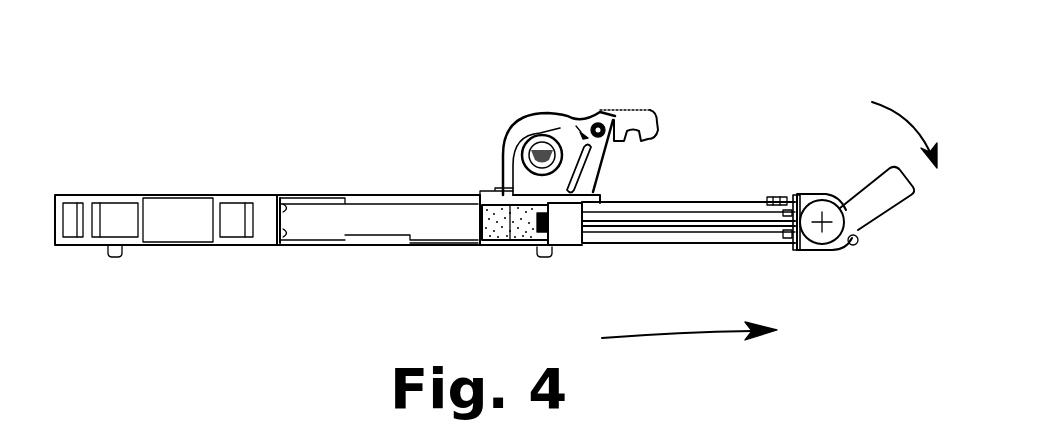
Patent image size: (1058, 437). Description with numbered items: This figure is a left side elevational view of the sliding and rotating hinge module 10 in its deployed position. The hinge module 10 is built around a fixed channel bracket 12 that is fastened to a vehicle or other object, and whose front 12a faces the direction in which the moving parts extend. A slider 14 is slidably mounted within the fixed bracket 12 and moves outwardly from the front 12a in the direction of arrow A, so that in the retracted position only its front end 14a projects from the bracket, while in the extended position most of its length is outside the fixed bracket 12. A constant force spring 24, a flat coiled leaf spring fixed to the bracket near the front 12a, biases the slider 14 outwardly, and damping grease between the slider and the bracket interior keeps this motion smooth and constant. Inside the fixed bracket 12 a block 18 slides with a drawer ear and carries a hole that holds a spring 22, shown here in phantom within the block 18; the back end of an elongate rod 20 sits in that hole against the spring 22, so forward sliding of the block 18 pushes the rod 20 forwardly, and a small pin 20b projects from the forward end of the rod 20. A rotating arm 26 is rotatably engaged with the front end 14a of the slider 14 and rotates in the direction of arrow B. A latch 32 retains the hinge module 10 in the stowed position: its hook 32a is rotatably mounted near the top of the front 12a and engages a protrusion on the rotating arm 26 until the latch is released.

The hinge module 10 is at (852, 60).
The fixed channel bracket 12 is at (142, 197).
The front 12a is at (600, 184).
The slider 14 is at (722, 208).
The front end 14a is at (807, 202).
The block 18 is at (485, 247).
The elongate rod 20 is at (708, 243).
The pin 20b is at (803, 250).
The spring 22 is at (510, 247).
The constant force spring 24 is at (533, 113).
The rotating arm 26 is at (884, 210).
The latch 32 is at (618, 113).
The hook 32a is at (653, 110).